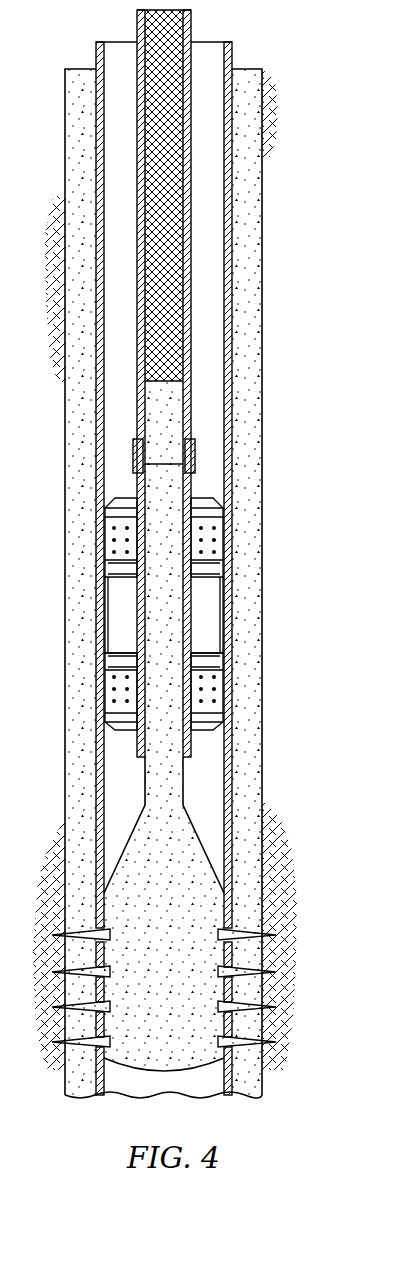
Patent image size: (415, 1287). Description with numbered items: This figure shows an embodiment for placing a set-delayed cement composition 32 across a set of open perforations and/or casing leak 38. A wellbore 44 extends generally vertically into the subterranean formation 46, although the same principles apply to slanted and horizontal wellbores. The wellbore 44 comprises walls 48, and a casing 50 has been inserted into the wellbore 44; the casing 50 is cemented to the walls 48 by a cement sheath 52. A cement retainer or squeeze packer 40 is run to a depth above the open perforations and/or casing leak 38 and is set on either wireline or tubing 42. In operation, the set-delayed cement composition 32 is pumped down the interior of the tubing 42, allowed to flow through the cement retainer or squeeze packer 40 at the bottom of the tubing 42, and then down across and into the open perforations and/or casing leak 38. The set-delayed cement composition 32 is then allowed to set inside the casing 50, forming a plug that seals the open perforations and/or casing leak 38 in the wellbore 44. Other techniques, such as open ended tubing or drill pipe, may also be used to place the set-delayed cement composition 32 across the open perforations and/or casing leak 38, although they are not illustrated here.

The set-delayed cement composition 32 is at (187, 888).
The perforations and/or casing leak 38 is at (242, 925).
The cement retainer or squeeze packer 40 is at (213, 676).
The tubing 42 is at (192, 484).
The wellbore 44 is at (246, 522).
The subterranean formation 46 is at (46, 458).
The walls 48 is at (263, 602).
The casing 50 is at (234, 351).
The cement sheath 52 is at (242, 243).